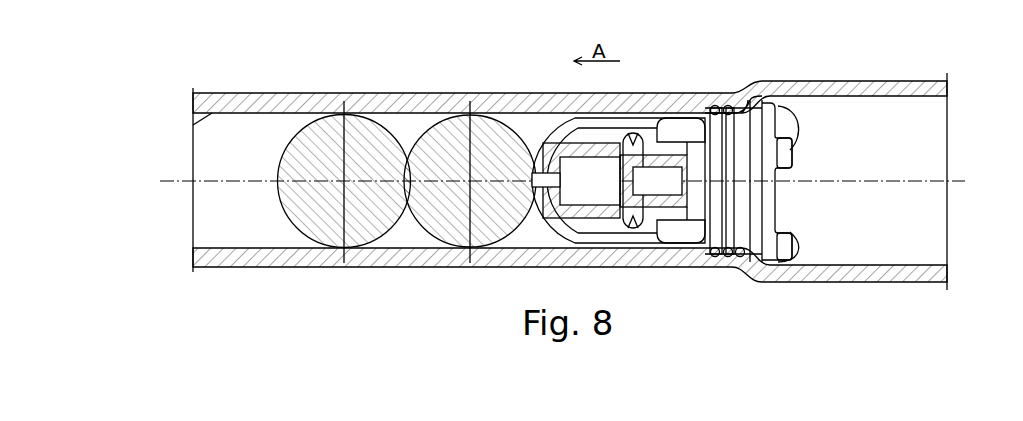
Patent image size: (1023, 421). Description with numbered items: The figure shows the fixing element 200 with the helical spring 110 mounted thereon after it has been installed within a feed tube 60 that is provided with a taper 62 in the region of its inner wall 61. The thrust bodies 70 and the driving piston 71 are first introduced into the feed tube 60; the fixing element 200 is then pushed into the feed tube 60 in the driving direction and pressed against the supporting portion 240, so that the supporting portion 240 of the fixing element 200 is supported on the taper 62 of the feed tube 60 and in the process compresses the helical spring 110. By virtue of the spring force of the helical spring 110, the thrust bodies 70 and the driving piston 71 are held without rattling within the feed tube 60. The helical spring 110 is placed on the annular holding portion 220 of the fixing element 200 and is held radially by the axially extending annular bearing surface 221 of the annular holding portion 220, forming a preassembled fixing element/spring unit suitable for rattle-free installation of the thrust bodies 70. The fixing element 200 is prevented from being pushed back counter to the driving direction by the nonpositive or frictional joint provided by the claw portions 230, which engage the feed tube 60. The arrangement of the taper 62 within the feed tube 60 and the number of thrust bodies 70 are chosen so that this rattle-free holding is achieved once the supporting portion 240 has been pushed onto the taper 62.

The feed tube 60 is at (285, 103).
The inner wall 61 is at (188, 128).
The thrust bodies 70 is at (362, 135).
The driving piston 71 is at (617, 125).
The taper 62 is at (720, 97).
The annular bearing surface 221 is at (722, 108).
The annular holding portion 220 is at (740, 257).
The supporting portion 240 is at (755, 103).
The fixing element 200 is at (762, 262).
The claw portions 230 is at (792, 155).
The helical spring 110 is at (718, 250).